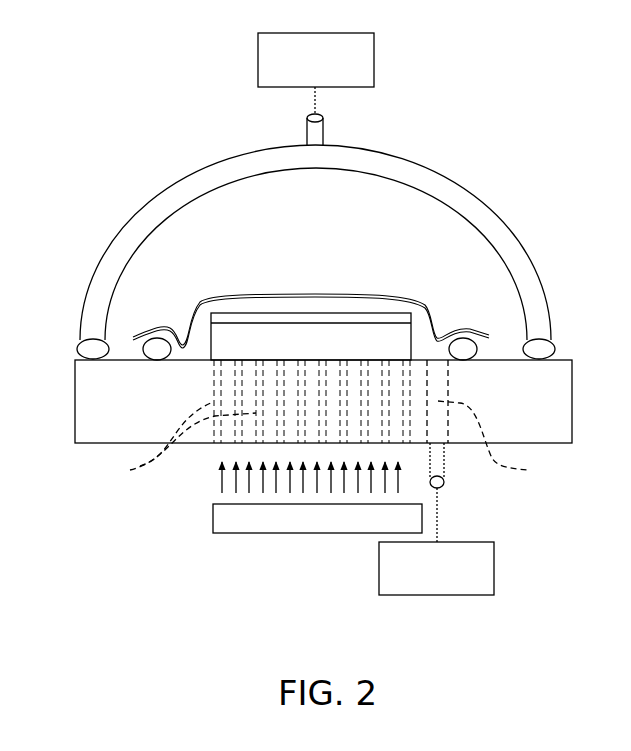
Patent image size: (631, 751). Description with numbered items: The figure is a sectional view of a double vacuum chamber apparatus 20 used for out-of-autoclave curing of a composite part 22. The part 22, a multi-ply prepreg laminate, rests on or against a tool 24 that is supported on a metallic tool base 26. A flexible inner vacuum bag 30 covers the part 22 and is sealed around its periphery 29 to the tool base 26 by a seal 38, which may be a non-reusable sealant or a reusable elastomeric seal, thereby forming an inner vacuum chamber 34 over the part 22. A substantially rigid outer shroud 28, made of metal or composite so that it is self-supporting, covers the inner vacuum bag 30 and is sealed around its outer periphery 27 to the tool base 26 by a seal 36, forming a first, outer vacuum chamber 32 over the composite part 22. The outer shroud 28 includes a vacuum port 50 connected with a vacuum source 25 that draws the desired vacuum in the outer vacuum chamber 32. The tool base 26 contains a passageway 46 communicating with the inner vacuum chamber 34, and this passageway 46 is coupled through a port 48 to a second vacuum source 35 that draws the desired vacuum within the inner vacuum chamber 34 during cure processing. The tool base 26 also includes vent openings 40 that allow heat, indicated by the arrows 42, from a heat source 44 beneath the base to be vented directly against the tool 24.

The double vacuum chamber apparatus 20 is at (553, 187).
The composite part 22 is at (347, 318).
The tool 24 is at (389, 338).
The vacuum source 25 is at (258, 58).
The tool base 26 is at (85, 410).
The outer periphery 27 is at (71, 316).
The outer shroud 28 is at (123, 227).
The periphery 29 is at (453, 320).
The inner vacuum bag 30 is at (197, 336).
The outer vacuum chamber 32 is at (239, 193).
The inner vacuum chamber 34 is at (184, 326).
The vacuum source 35 is at (495, 567).
The seal 36 is at (84, 348).
The seal 38 is at (158, 345).
The vent openings 40 is at (130, 466).
The arrows 42 is at (220, 478).
The heat source 44 is at (212, 517).
The passageway 46 is at (495, 441).
The vacuum port 48 is at (445, 465).
The vacuum port 50 is at (327, 132).